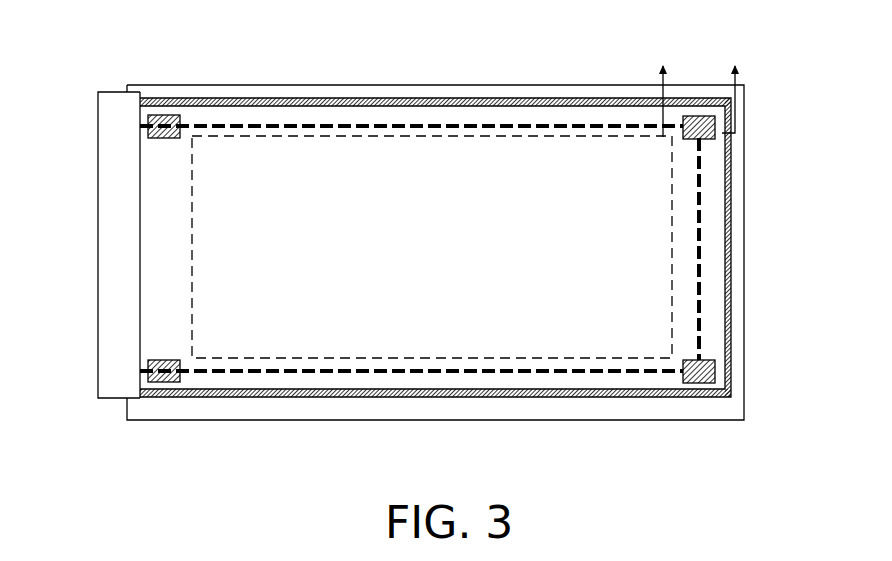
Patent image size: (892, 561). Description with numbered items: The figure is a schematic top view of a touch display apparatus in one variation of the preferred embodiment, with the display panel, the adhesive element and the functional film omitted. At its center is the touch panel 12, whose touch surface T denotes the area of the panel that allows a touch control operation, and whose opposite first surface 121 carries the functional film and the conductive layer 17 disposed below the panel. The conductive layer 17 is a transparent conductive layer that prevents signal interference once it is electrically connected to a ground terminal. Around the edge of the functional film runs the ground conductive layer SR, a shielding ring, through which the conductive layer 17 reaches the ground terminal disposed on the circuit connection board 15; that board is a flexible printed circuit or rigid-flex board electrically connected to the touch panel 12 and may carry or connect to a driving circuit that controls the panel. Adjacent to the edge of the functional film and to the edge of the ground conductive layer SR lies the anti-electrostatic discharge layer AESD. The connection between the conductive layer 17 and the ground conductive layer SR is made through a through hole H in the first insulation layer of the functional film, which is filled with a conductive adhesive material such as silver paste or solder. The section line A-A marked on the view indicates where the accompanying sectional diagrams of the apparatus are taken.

The touch panel 12 is at (183, 84).
The first surface 121 is at (253, 97).
The conductive layer 17 is at (340, 104).
The circuit connection board 15 is at (107, 222).
The anti-electrostatic discharge layer AESD is at (490, 104).
The ground conductive layer SR is at (562, 126).
The through hole H is at (706, 116).
The touch surface T is at (424, 156).
The line A- A is at (700, 86).